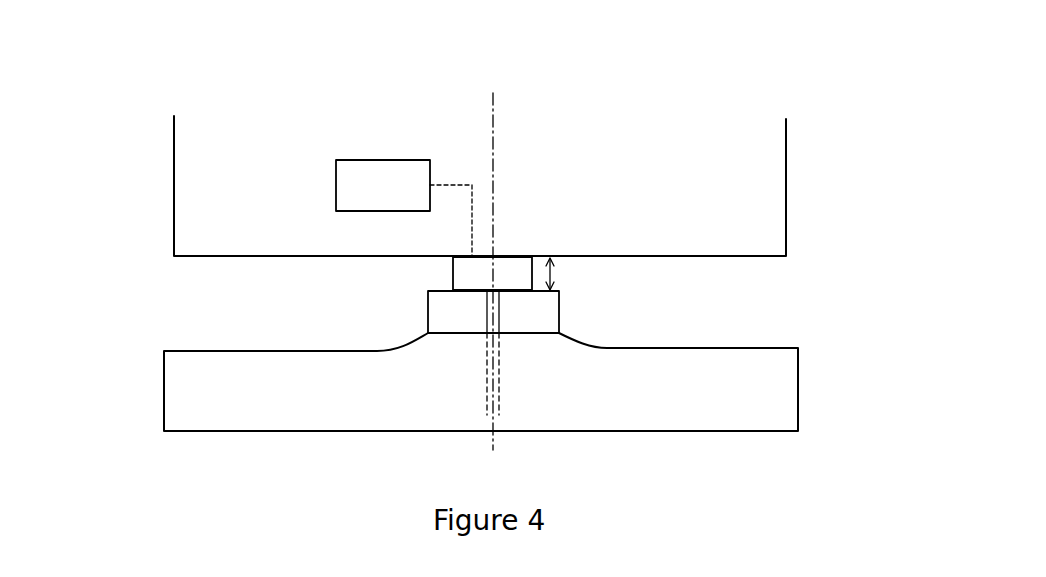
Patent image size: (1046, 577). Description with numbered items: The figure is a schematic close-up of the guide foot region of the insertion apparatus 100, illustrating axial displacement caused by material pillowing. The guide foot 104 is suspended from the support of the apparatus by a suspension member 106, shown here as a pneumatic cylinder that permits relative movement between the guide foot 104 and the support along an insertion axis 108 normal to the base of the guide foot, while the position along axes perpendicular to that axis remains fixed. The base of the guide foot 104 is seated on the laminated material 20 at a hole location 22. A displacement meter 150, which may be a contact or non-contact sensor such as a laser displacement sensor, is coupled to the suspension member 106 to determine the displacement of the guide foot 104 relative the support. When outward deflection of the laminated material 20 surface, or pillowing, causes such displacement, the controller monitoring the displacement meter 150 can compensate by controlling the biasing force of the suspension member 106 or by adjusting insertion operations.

The insertion apparatus 100 is at (146, 93).
The displacement meter 150 is at (362, 178).
The insertion axis 108 is at (495, 143).
The suspension member 106 is at (452, 270).
The guide foot 104 is at (560, 313).
The hole location 22 is at (499, 397).
The laminated material 20 is at (799, 396).